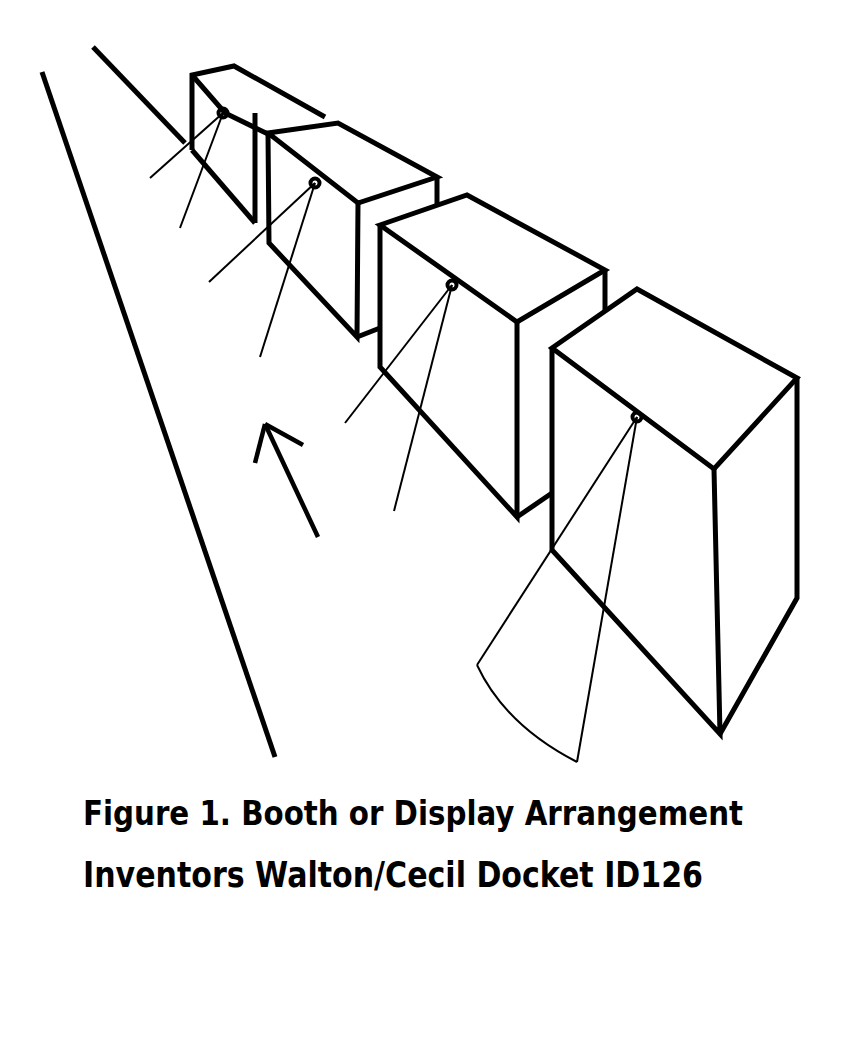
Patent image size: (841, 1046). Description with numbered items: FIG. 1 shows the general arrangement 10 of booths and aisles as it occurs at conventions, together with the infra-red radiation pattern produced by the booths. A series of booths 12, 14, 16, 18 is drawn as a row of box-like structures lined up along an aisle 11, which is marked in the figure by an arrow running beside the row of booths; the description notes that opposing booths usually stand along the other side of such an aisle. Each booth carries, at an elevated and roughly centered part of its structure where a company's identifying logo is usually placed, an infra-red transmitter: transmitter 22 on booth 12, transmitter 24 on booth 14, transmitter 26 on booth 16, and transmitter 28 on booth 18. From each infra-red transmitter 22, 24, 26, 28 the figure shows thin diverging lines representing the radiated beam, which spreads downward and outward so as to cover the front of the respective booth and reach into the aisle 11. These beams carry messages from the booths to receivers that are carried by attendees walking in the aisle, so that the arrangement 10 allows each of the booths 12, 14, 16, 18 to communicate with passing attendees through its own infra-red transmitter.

The general arrangement 10 is at (173, 546).
The aisle 11 is at (393, 610).
The booth 12 is at (700, 313).
The booth 14 is at (512, 215).
The booth 16 is at (367, 130).
The booth 18 is at (263, 78).
The infra-red transmitter 22 is at (652, 394).
The infra-red transmitter 24 is at (468, 262).
The infra-red transmitter 26 is at (329, 156).
The infra-red transmitter 28 is at (241, 96).